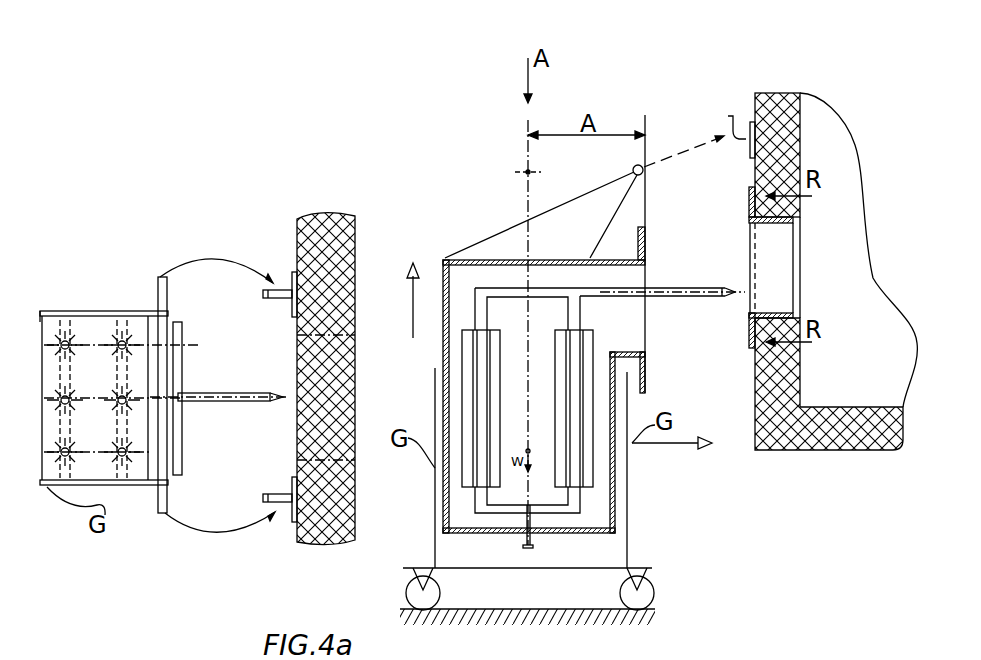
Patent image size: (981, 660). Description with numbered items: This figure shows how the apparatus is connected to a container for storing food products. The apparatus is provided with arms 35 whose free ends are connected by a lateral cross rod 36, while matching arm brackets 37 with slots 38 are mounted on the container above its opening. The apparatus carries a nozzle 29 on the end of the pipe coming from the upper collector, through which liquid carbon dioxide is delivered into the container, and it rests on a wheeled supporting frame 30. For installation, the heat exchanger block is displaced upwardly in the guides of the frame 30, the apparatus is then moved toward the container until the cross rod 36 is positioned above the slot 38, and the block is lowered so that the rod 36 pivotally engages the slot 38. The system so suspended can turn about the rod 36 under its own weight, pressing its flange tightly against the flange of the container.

The nozzle 29 is at (280, 393).
The supporting frame 30 is at (648, 592).
The arms 35 is at (97, 316).
The lateral cross rod 36 is at (160, 278).
The arm bracket 37 is at (263, 294).
The slot 38 is at (270, 280).